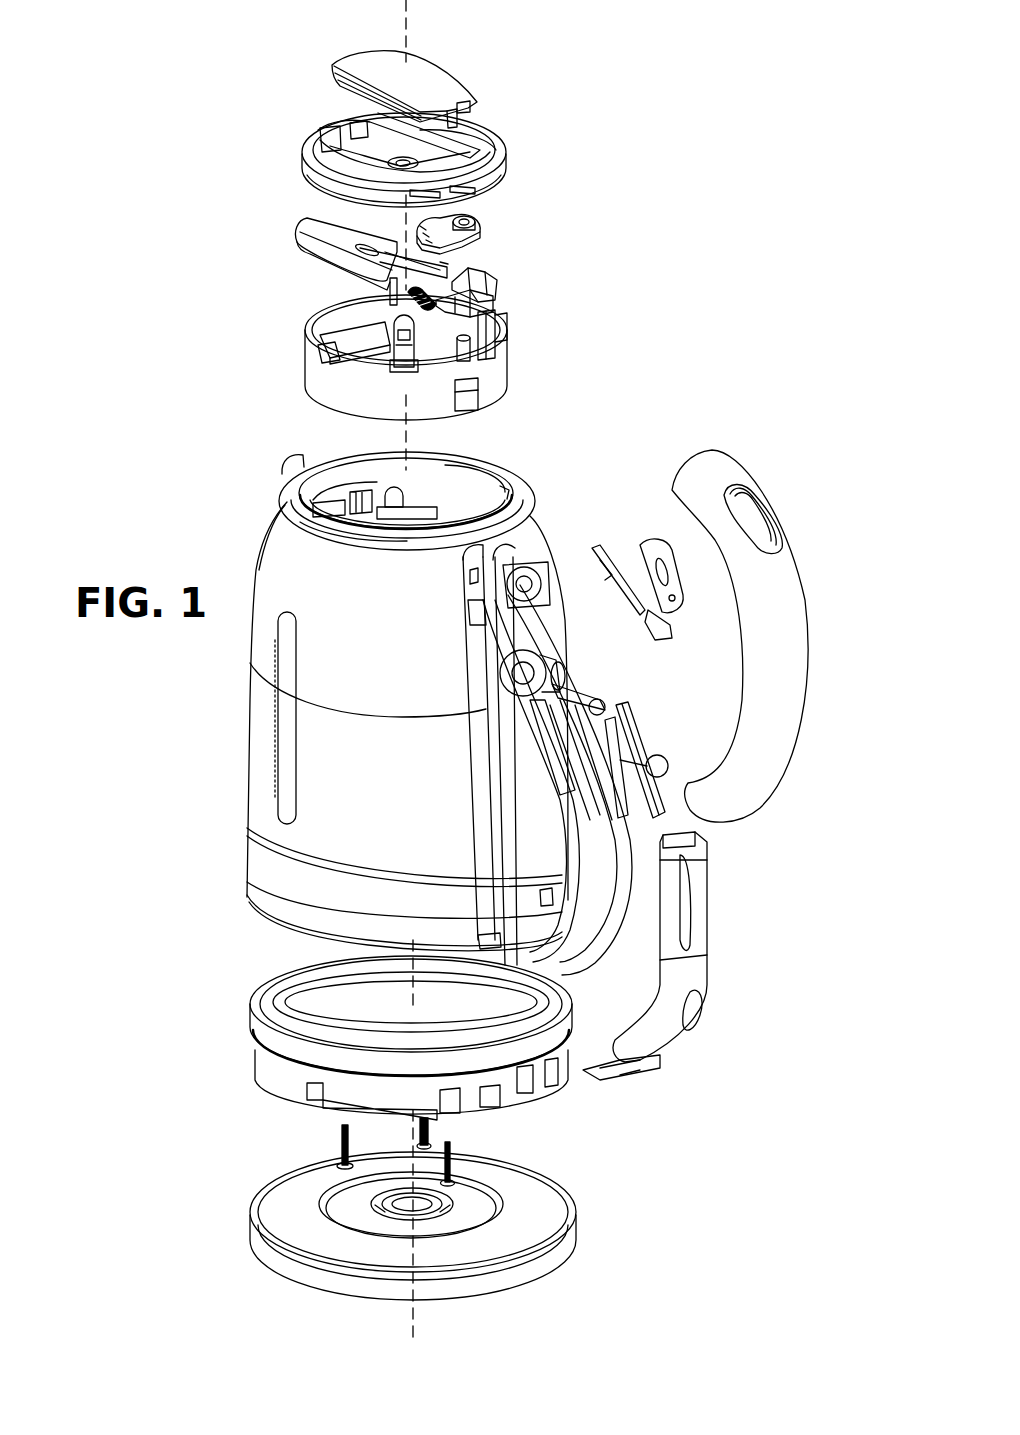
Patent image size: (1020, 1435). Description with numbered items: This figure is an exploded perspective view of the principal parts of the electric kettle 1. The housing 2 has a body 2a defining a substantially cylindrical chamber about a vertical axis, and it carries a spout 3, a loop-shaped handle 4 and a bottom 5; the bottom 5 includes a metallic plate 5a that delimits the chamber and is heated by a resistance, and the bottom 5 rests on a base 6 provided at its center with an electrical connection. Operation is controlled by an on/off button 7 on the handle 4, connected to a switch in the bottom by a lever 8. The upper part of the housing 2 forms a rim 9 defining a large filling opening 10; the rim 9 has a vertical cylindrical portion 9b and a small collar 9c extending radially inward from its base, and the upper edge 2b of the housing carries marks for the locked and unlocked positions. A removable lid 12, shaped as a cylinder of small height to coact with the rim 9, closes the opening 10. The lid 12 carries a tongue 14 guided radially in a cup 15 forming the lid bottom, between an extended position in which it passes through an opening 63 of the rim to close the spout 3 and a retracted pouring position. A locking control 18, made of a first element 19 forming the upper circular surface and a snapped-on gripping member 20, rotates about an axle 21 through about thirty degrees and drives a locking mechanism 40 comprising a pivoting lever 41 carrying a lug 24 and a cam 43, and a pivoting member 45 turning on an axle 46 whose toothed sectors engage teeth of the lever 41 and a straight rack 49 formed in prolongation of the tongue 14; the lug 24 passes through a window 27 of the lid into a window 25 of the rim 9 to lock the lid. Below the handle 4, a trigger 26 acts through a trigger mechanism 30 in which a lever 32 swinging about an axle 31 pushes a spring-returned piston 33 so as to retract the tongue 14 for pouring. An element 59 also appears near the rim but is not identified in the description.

The electric kettle 1 is at (203, 790).
The housing 2 is at (406, 3).
The body 2a is at (262, 538).
The upper edge 2b is at (332, 533).
The spout 3 is at (283, 463).
The handle 4 is at (812, 590).
The bottom 5 is at (268, 1068).
The metallic plate 5a is at (257, 1010).
The base 6 is at (574, 1218).
The on/off button 7 is at (650, 540).
The lever 8 is at (706, 968).
The rim 9 is at (500, 503).
The vertical cylindrical portion 9b is at (487, 484).
The small collar 9c is at (435, 507).
The opening 10 is at (464, 480).
The lid 12 is at (226, 47).
The tongue 14 is at (314, 228).
The cup 15 is at (312, 365).
The locking control 18 is at (490, 108).
The first element 19 is at (505, 143).
The gripping member 20 is at (430, 80).
The axle 21 is at (398, 360).
The lug 24 is at (500, 318).
The window 25 is at (477, 563).
The trigger 26 is at (617, 843).
The window 27 is at (478, 407).
The trigger mechanism 30 is at (645, 648).
The axle 31 is at (668, 758).
The lever 32 is at (640, 727).
The piston 33 is at (566, 690).
The locking mechanism 40 is at (563, 157).
The pivoting lever 41 is at (497, 292).
The cam 43 is at (472, 280).
The pivoting member 45 is at (480, 226).
The axle 46 is at (466, 345).
The straight rack 49 is at (432, 258).
The peg 59 is at (390, 489).
The opening 63 is at (342, 526).